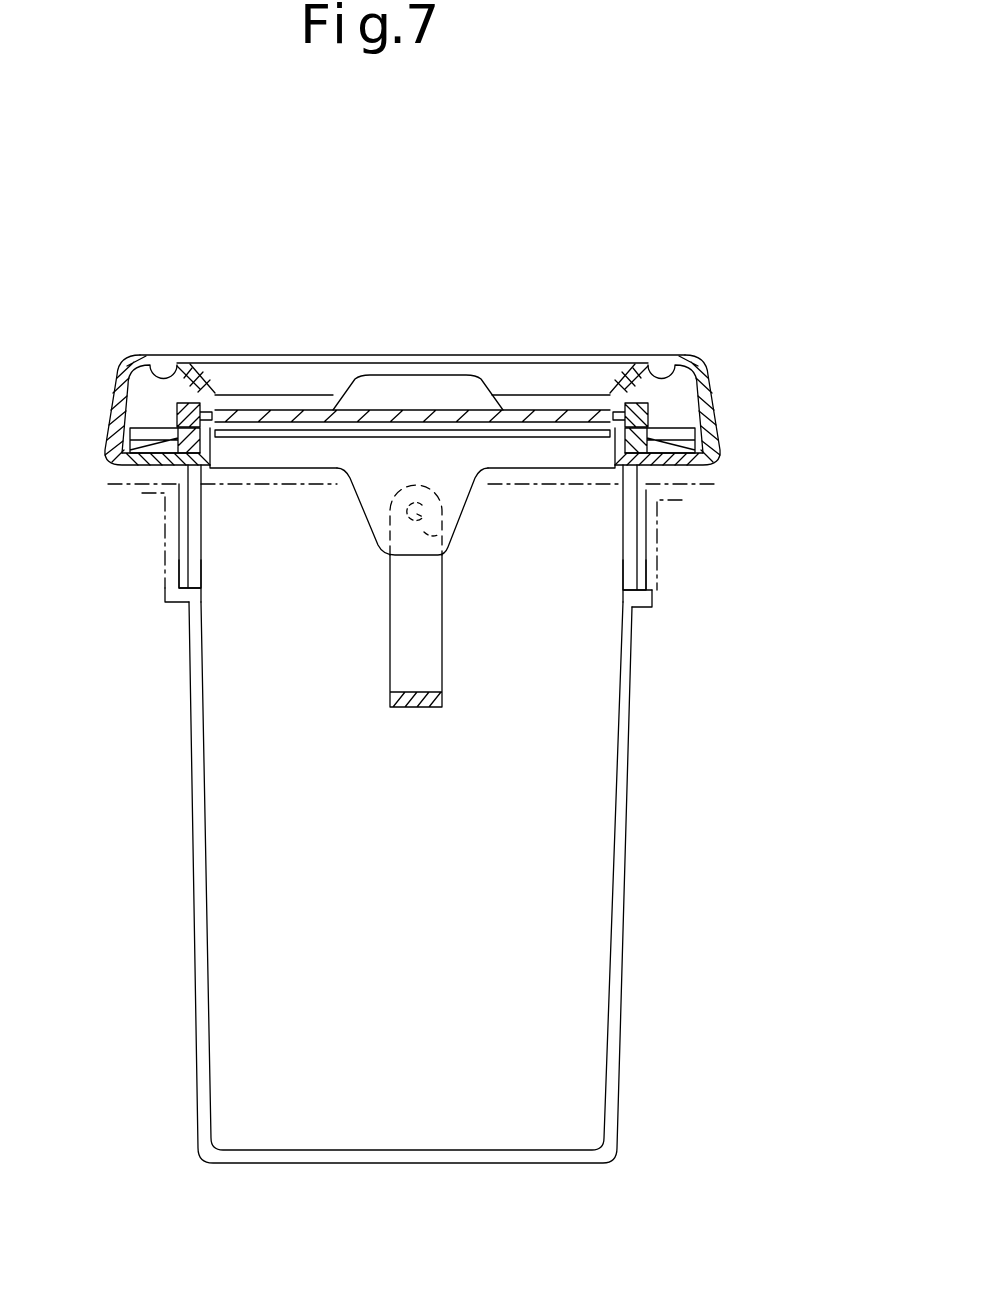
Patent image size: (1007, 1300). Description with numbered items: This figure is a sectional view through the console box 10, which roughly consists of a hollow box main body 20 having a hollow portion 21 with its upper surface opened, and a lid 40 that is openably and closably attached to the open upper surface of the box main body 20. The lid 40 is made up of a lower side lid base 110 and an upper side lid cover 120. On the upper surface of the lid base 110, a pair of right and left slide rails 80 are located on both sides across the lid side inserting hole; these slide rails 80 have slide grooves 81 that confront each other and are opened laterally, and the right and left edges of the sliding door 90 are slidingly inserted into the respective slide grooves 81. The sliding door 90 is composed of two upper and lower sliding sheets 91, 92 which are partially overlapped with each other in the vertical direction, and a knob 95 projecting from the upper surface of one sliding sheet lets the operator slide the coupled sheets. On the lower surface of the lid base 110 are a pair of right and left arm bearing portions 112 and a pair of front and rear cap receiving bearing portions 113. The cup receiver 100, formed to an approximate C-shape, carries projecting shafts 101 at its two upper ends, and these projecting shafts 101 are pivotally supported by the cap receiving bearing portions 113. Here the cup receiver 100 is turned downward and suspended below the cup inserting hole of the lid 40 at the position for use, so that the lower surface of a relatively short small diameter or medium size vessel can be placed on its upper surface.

The console box 10 is at (170, 151).
The box main body 20 is at (625, 772).
The hollow portion 21 is at (548, 980).
The lid 40 is at (837, 365).
The slide rails 80 is at (107, 443).
The slide grooves 81 is at (222, 383).
The sliding door 90 is at (357, 297).
The sliding sheet 91 is at (315, 429).
The sliding sheet 92 is at (262, 409).
The knob 95 is at (430, 382).
The cup receiver 100 is at (398, 668).
The projecting shafts 101 is at (450, 540).
The lid base 110 is at (713, 503).
The arm bearing portions 112 is at (190, 568).
The cap receiving bearing portions 113 is at (372, 493).
The lid cover 120 is at (713, 392).